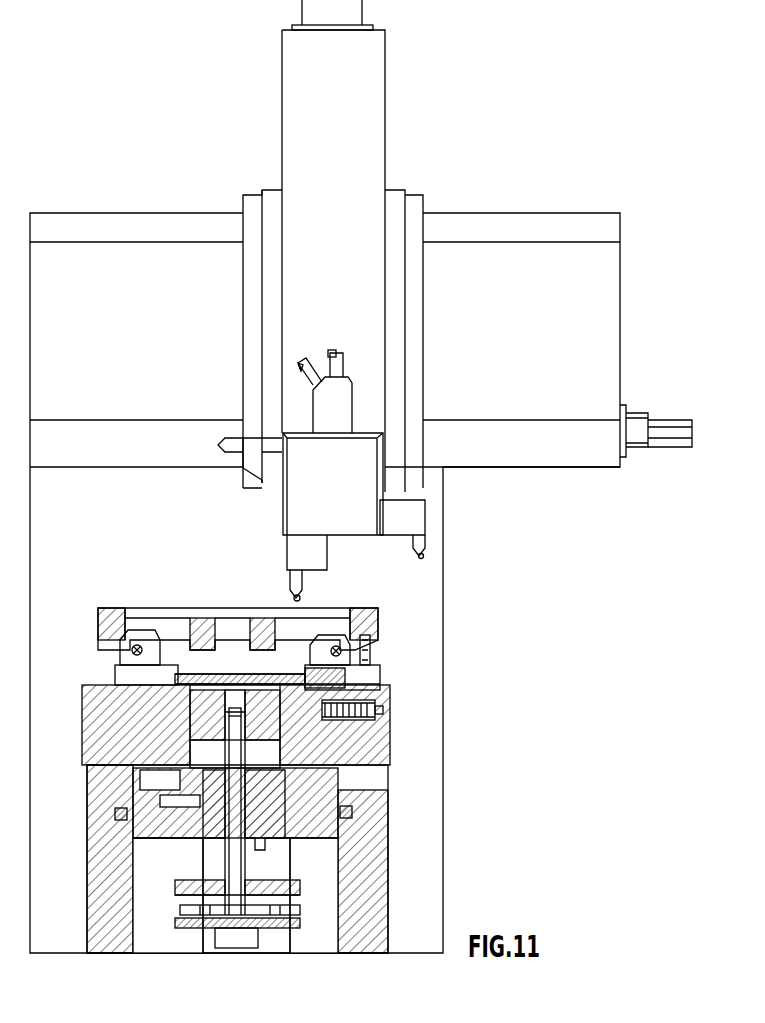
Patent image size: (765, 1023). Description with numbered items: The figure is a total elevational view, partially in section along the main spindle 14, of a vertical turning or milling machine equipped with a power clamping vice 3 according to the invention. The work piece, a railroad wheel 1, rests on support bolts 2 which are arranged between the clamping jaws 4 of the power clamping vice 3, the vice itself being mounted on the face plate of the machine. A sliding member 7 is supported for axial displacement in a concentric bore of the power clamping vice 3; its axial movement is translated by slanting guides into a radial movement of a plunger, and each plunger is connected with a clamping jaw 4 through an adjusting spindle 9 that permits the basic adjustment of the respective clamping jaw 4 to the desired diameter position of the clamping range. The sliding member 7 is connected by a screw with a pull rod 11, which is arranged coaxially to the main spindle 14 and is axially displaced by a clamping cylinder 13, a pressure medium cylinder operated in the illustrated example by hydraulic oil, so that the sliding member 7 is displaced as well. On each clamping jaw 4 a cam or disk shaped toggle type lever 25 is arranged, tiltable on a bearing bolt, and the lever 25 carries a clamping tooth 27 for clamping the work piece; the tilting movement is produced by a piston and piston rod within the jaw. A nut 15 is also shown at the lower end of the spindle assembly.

The railroad wheel 1 is at (370, 617).
The clamping tooth 27 is at (350, 635).
The toggle type lever 25 is at (372, 652).
The support bolts 2 is at (385, 670).
The clamping jaws 4 is at (372, 703).
The adjusting spindle 9 is at (375, 735).
The power clamping vice 3 is at (370, 752).
The sliding member 7 is at (200, 728).
The pull rod 11 is at (232, 825).
The main spindle 14 is at (265, 843).
The clamping cylinder 13 is at (180, 928).
The nut 15 is at (235, 948).